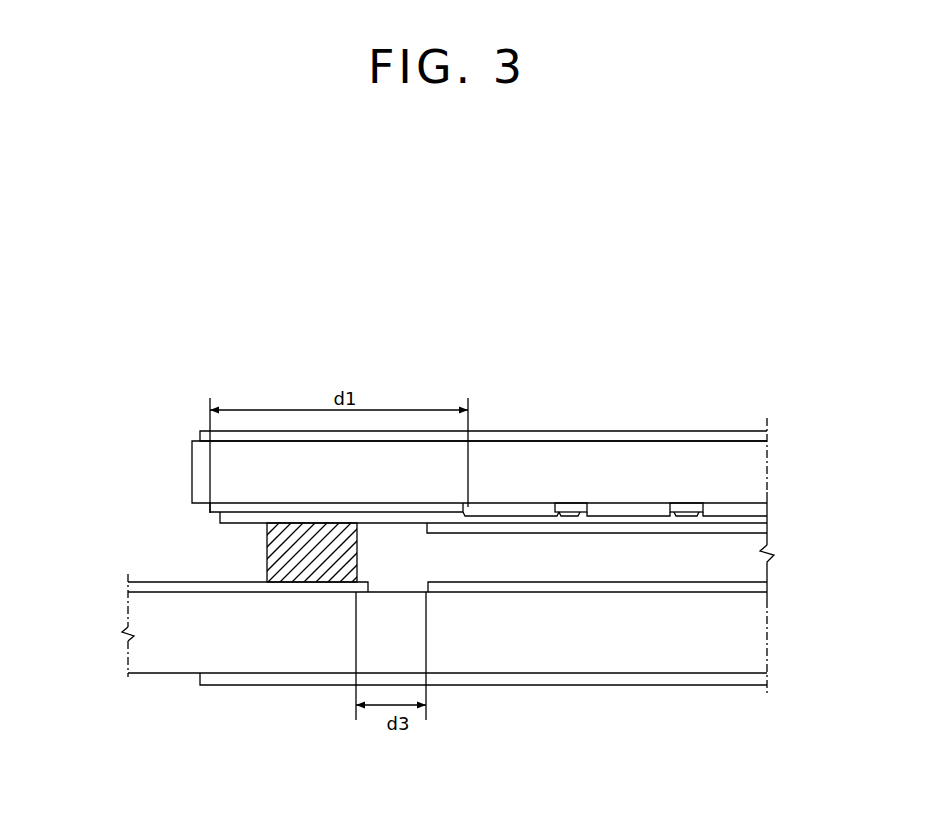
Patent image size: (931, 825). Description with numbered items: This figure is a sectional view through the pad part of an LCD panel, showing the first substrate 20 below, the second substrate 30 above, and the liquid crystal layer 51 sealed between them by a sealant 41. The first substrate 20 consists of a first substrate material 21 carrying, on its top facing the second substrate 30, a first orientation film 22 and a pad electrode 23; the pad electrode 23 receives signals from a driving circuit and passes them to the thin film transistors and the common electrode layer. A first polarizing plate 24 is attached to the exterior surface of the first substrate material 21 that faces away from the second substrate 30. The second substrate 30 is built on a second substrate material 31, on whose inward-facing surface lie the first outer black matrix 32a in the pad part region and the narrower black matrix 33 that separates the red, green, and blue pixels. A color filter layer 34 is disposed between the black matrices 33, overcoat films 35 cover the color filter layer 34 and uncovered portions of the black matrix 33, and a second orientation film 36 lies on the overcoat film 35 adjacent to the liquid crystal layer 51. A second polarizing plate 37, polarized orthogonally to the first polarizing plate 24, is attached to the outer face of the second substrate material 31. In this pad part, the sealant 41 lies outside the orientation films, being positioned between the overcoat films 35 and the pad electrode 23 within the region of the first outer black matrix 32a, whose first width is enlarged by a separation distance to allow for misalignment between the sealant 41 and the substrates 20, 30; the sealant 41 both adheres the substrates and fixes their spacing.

The first substrate 20 is at (67, 550).
The first substrate material 21 is at (491, 655).
The first orientation film 22 is at (770, 583).
The pad electrode 23 is at (127, 587).
The first polarizing plate 24 is at (628, 677).
The second substrate 30 is at (122, 388).
The second substrate material 31 is at (214, 469).
The first outer black matrix 32a is at (452, 506).
The black matrix 33 is at (570, 506).
The color filter layer 34 is at (535, 507).
The overcoat film 35 is at (220, 523).
The second orientation film 36 is at (770, 525).
The second polarizing plate 37 is at (660, 436).
The sealant 41 is at (267, 557).
The liquid crystal layer 51 is at (770, 552).